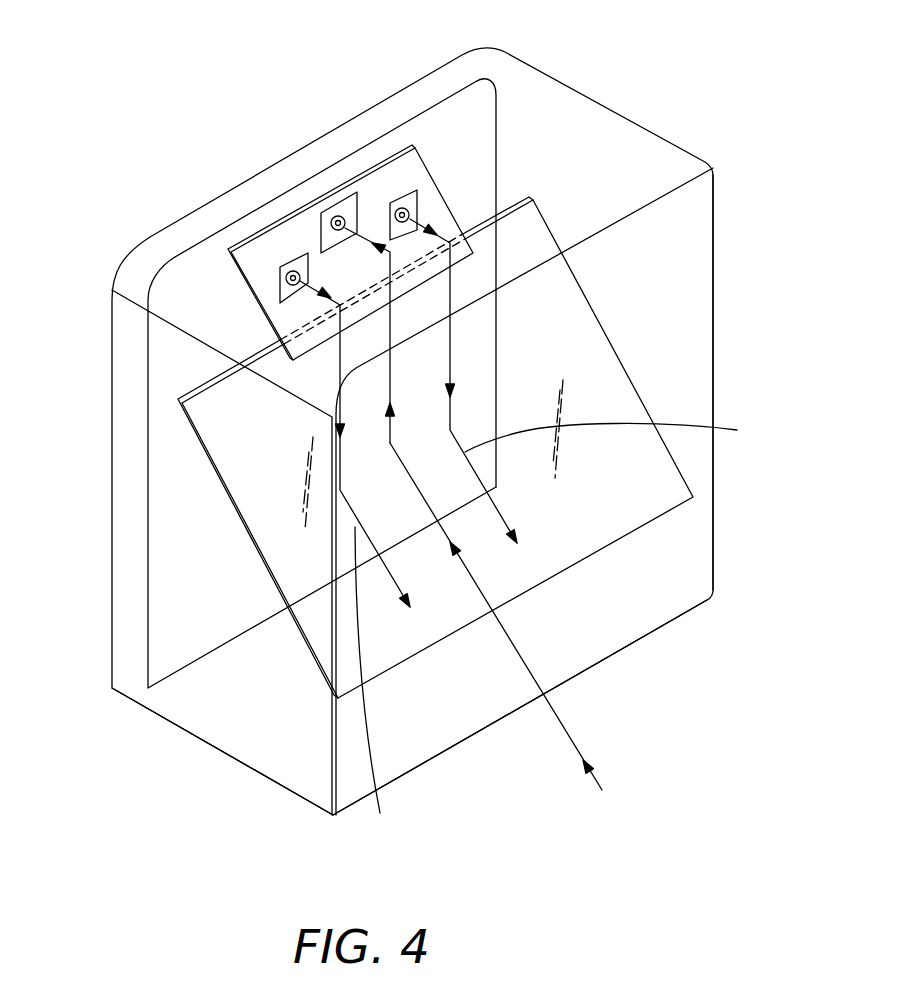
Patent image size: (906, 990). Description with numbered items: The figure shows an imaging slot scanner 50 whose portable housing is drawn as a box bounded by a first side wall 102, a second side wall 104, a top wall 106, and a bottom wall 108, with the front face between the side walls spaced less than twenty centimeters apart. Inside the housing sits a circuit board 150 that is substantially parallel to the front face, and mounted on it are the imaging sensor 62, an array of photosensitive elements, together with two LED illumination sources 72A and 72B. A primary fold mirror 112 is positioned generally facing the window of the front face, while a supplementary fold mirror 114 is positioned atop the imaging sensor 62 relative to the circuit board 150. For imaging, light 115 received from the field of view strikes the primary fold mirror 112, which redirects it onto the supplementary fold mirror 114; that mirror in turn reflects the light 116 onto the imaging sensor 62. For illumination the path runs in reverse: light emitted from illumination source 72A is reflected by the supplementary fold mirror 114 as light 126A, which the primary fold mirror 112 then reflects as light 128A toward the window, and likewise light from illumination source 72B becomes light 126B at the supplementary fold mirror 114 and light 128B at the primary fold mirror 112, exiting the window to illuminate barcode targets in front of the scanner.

The imaging slot scanner 50 is at (693, 45).
The imaging sensor 62 is at (340, 194).
The illumination source 72A is at (290, 262).
The illumination source 72B is at (400, 196).
The first side wall 102 is at (112, 527).
The second side wall 104 is at (715, 248).
The top wall 106 is at (602, 137).
The bottom wall 108 is at (228, 740).
The primary fold mirror 112 is at (273, 585).
The supplementary fold mirror 114 is at (243, 273).
The light 115 is at (560, 718).
The light 116 is at (390, 375).
The light 126A is at (340, 442).
The light 126B is at (450, 353).
The light 128A is at (379, 684).
The light 128B is at (625, 434).
The circuit board 150 is at (343, 155).